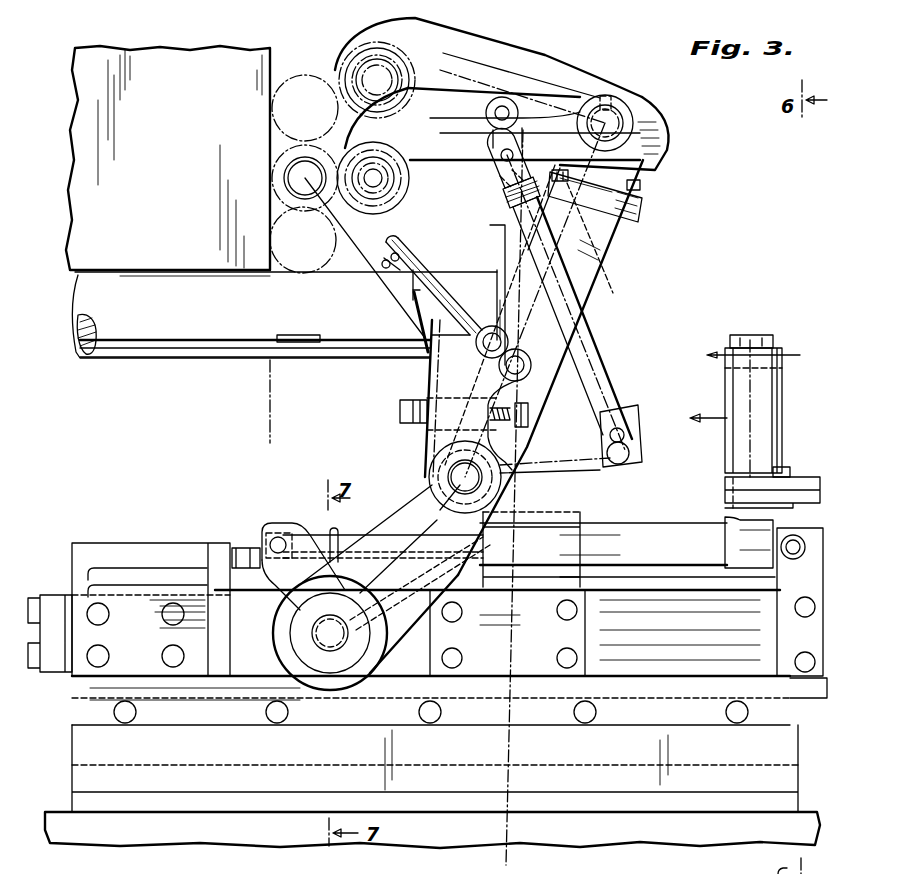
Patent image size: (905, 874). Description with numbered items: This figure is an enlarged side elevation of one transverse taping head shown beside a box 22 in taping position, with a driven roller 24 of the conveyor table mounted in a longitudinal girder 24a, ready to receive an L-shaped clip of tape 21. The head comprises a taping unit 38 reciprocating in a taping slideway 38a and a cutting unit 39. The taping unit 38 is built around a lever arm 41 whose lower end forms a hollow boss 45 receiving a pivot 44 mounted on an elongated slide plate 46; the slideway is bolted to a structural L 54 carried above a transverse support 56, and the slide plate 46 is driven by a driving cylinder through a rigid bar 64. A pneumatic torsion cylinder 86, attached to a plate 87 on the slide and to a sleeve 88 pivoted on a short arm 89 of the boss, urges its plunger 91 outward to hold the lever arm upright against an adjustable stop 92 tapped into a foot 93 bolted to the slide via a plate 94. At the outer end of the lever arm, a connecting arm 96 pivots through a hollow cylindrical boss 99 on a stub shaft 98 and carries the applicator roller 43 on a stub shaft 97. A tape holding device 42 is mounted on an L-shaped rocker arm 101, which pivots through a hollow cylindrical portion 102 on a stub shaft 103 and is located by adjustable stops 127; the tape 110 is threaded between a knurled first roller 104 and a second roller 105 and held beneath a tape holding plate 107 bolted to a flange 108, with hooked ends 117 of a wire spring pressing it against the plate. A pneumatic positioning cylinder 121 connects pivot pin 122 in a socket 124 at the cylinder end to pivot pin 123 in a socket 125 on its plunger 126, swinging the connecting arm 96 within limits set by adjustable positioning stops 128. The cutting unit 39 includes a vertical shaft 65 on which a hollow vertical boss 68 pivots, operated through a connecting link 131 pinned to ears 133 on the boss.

The box 22 is at (168, 158).
The clip of tape 21 is at (210, 280).
The roller 24 is at (140, 360).
The longitudinal girder 24a is at (504, 240).
The vertical shaft 65 is at (303, 335).
The applicator roller 43 is at (318, 62).
The stub shaft 97 is at (374, 166).
The connecting arm 96 is at (580, 62).
The stub shaft 98 is at (622, 118).
The hollow cylindrical boss 99 is at (606, 106).
The pivot pin 123 is at (500, 157).
The socket 125 is at (505, 175).
The plunger 126 is at (515, 204).
The pneumatic positioning cylinder 121 is at (596, 340).
The pivot pin 122 is at (626, 432).
The socket 124 is at (630, 410).
The adjustable positioning stop 128 is at (558, 168).
The taping unit 38 is at (622, 258).
The tape holding plate 107 is at (400, 246).
The flange 108 is at (420, 303).
The hooked end 117 is at (382, 265).
The tape holding device 42 is at (404, 284).
The tape 110 is at (358, 250).
The second roller 105 is at (491, 325).
The first roller 104 is at (503, 370).
The L-shaped rocker arm 101 is at (425, 442).
The adjustable stop 127 is at (424, 400).
The hollow cylindrical portion 102 is at (490, 486).
The stub shaft 103 is at (440, 510).
The lever arm 41 is at (396, 530).
The cutting unit 39 is at (788, 405).
The hollow vertical boss 68 is at (706, 403).
The connecting link 131 is at (804, 490).
The ear 133 is at (792, 470).
The pneumatic torsion cylinder 86 is at (627, 547).
The foot 93 is at (210, 560).
The rigid bar 64 is at (48, 595).
The plate 94 is at (70, 680).
The slide plate 46 is at (497, 633).
The plate 87 is at (780, 662).
The structural L 54 is at (435, 768).
The transverse support 56 is at (432, 830).
The taping slideway 38a is at (208, 686).
The pivot 44 is at (333, 628).
The hollow boss 45 is at (378, 628).
The short arm 89 is at (268, 522).
The sleeve 88 is at (310, 530).
The plunger 91 is at (372, 534).
The adjustable stop 92 is at (248, 548).